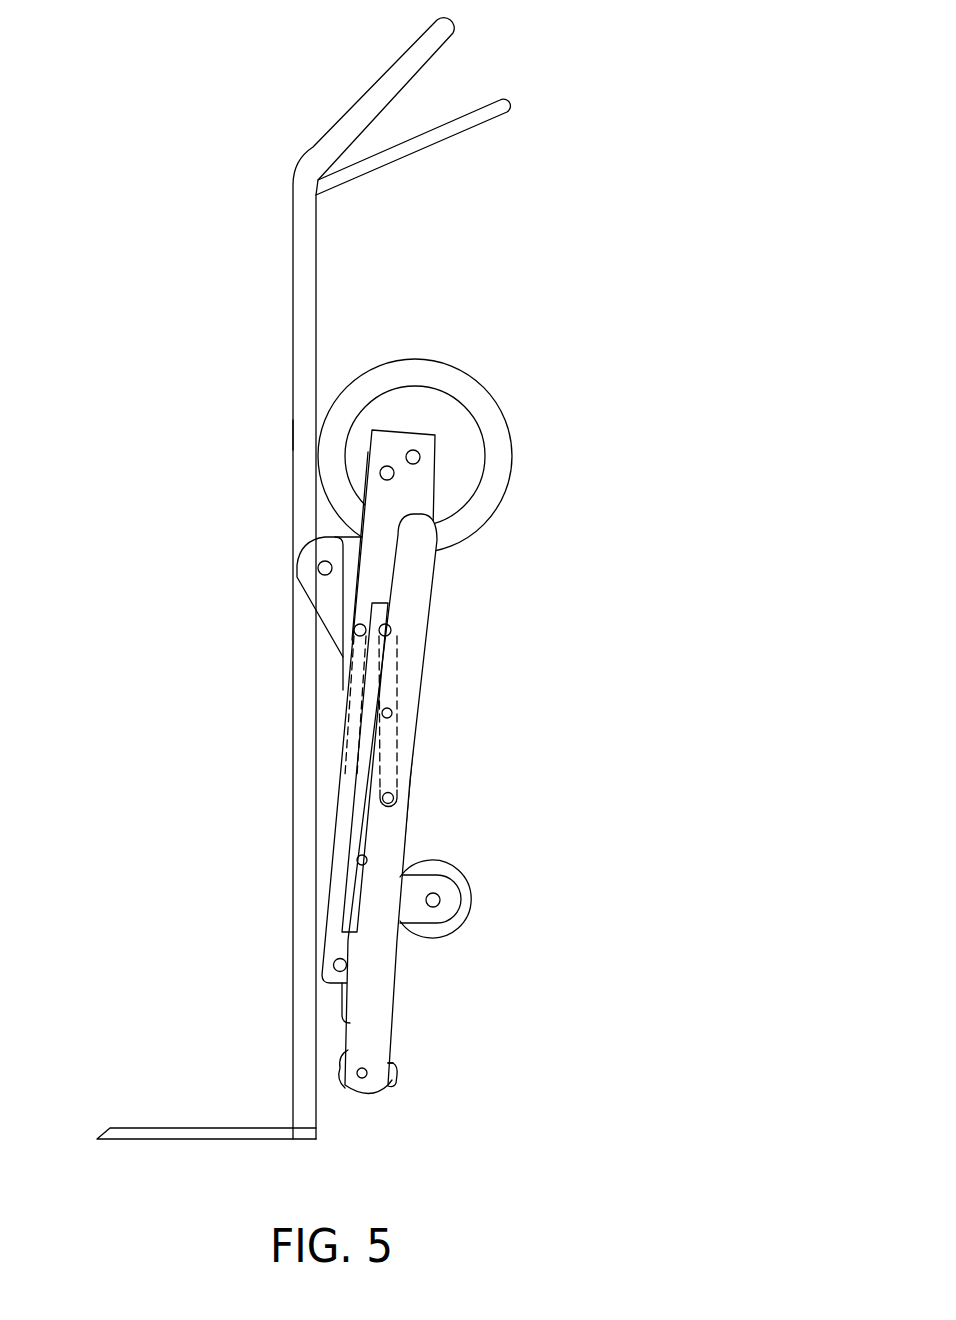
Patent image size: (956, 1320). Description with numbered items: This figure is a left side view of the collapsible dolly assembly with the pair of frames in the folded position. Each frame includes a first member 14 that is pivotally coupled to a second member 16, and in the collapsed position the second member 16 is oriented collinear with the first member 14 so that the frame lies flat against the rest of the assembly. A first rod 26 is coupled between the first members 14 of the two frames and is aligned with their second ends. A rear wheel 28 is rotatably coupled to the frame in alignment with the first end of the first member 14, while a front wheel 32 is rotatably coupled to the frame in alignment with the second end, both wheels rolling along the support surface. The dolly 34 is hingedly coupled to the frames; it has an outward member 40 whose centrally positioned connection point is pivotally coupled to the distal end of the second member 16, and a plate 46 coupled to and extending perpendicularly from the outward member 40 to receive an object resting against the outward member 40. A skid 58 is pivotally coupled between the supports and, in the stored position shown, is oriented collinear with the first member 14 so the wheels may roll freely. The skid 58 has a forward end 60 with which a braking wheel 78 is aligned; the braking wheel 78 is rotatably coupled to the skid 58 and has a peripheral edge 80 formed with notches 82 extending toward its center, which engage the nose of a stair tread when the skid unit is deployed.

The first member 14 is at (433, 493).
The second member 16 is at (345, 663).
The first rod 26 is at (333, 960).
The rear wheel 28 is at (472, 376).
The front wheel 32 is at (465, 898).
The dolly 34 is at (275, 433).
The outward member 40 is at (293, 272).
The plate 46 is at (162, 1128).
The skid 58 is at (417, 730).
The forward end 60 is at (353, 1107).
The braking wheel 78 is at (342, 1053).
The peripheral edge 80 is at (393, 1067).
The notch 82 is at (338, 1075).